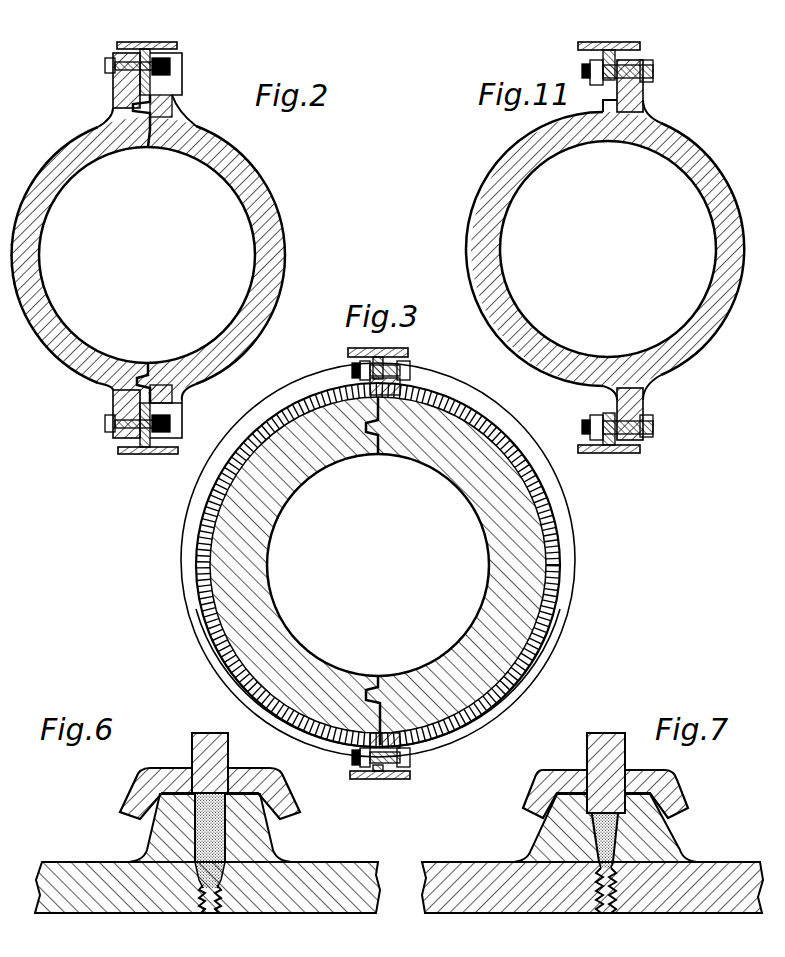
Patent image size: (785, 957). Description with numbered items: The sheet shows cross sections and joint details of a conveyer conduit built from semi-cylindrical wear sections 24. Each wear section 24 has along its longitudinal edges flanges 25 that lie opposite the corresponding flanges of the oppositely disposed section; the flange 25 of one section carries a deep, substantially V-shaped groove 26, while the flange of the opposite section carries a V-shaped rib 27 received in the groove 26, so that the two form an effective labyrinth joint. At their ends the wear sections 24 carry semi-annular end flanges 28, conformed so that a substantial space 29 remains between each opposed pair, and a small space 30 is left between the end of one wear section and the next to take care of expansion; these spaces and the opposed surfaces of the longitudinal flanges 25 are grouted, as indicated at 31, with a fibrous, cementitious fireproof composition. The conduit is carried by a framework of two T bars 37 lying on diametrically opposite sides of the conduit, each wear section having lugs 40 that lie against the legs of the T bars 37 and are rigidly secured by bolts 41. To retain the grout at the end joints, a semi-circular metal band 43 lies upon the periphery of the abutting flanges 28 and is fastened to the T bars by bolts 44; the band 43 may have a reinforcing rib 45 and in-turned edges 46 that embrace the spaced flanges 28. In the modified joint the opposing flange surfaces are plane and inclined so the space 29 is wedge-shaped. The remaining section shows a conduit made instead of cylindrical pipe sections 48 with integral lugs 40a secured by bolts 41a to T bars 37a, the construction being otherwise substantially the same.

In FIG. 2, the semi-cylindrical wear section 24 is at (43, 238).
In FIG. 3, the semi-cylindrical wear section 24 is at (262, 590).
In FIG. 6, the semi-cylindrical wear section 24 is at (60, 862).
In FIG. 7, the semi-cylindrical wear section 24 is at (462, 862).
In FIG. 2, the longitudinal flange 25 is at (178, 110).
In FIG. 2, the V-shaped longitudinal groove 26 is at (135, 121).
In FIG. 3, the V-shaped longitudinal groove 26 is at (366, 432).
In FIG. 2, the V-shaped rib 27 is at (152, 140).
In FIG. 3, the V-shaped rib 27 is at (385, 435).
In FIG. 3, the semi-annular end flange 28 is at (205, 575).
In FIG. 6, the semi-annular end flange 28 is at (160, 833).
In FIG. 7, the semi-annular end flange 28 is at (560, 840).
In FIG. 6, the space between end flanges 29 is at (185, 868).
In FIG. 7, the space between end flanges 29 is at (622, 840).
In FIG. 6, the space between wear section ends 30 is at (208, 915).
In FIG. 7, the space between wear section ends 30 is at (612, 916).
In FIG. 2, the grouting 31 is at (148, 362).
In FIG. 3, the grouting 31 is at (380, 454).
In FIG. 6, the grouting 31 is at (228, 900).
In FIG. 7, the grouting 31 is at (597, 880).
In FIG. 2, the T bar 37 is at (150, 45).
In FIG. 3, the T bar 37 is at (350, 350).
In FIG. 11, the T bar 37a is at (617, 45).
In FIG. 2, the lug 40 is at (184, 62).
In FIG. 11, the lug 40a is at (645, 95).
In FIG. 2, the bolt 41 is at (105, 65).
In FIG. 11, the bolt 41a is at (655, 72).
In FIG. 3, the semi-circular metal band 43 is at (450, 388).
In FIG. 6, the semi-circular metal band 43 is at (208, 742).
In FIG. 7, the semi-circular metal band 43 is at (628, 782).
In FIG. 3, the bolt 44 is at (412, 372).
In FIG. 3, the reinforcing rib 45 is at (207, 648).
In FIG. 6, the reinforcing rib 45 is at (195, 752).
In FIG. 7, the reinforcing rib 45 is at (590, 752).
In FIG. 6, the in-turned edge 46 is at (145, 790).
In FIG. 7, the in-turned edge 46 is at (545, 795).
In FIG. 11, the cylindrical pipe section 48 is at (502, 210).